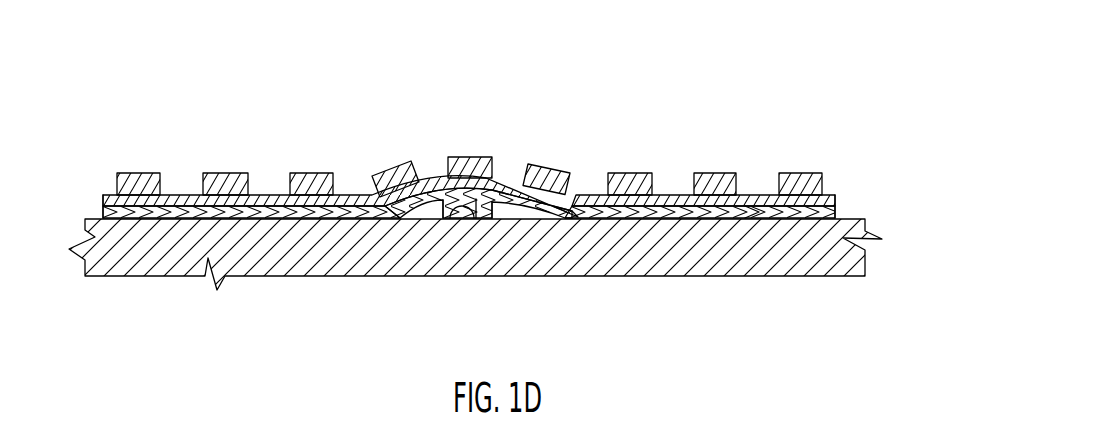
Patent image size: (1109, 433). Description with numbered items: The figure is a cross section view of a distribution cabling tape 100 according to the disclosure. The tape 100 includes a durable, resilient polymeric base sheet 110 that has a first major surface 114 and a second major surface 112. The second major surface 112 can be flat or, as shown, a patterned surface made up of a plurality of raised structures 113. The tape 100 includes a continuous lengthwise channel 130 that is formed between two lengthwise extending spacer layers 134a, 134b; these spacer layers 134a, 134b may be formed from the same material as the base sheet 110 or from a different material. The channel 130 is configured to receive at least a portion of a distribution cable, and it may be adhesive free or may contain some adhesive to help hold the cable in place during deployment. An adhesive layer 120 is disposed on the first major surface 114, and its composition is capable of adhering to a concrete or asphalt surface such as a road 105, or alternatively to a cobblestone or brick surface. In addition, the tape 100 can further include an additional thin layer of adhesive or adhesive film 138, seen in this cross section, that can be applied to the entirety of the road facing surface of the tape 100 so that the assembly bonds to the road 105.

The distribution cabling tape 100 is at (672, 52).
The road 105 is at (852, 252).
The durable, resilient polymeric base sheet 110 is at (145, 177).
The second major surface 112 is at (823, 185).
The raised structures 113 is at (722, 172).
The first major surface 114 is at (753, 207).
The adhesive layer 120 is at (822, 212).
The continuous lengthwise channel 130 is at (505, 200).
The spacer layer 134a is at (437, 212).
The spacer layer 134b is at (522, 210).
The adhesive film 138 is at (478, 200).